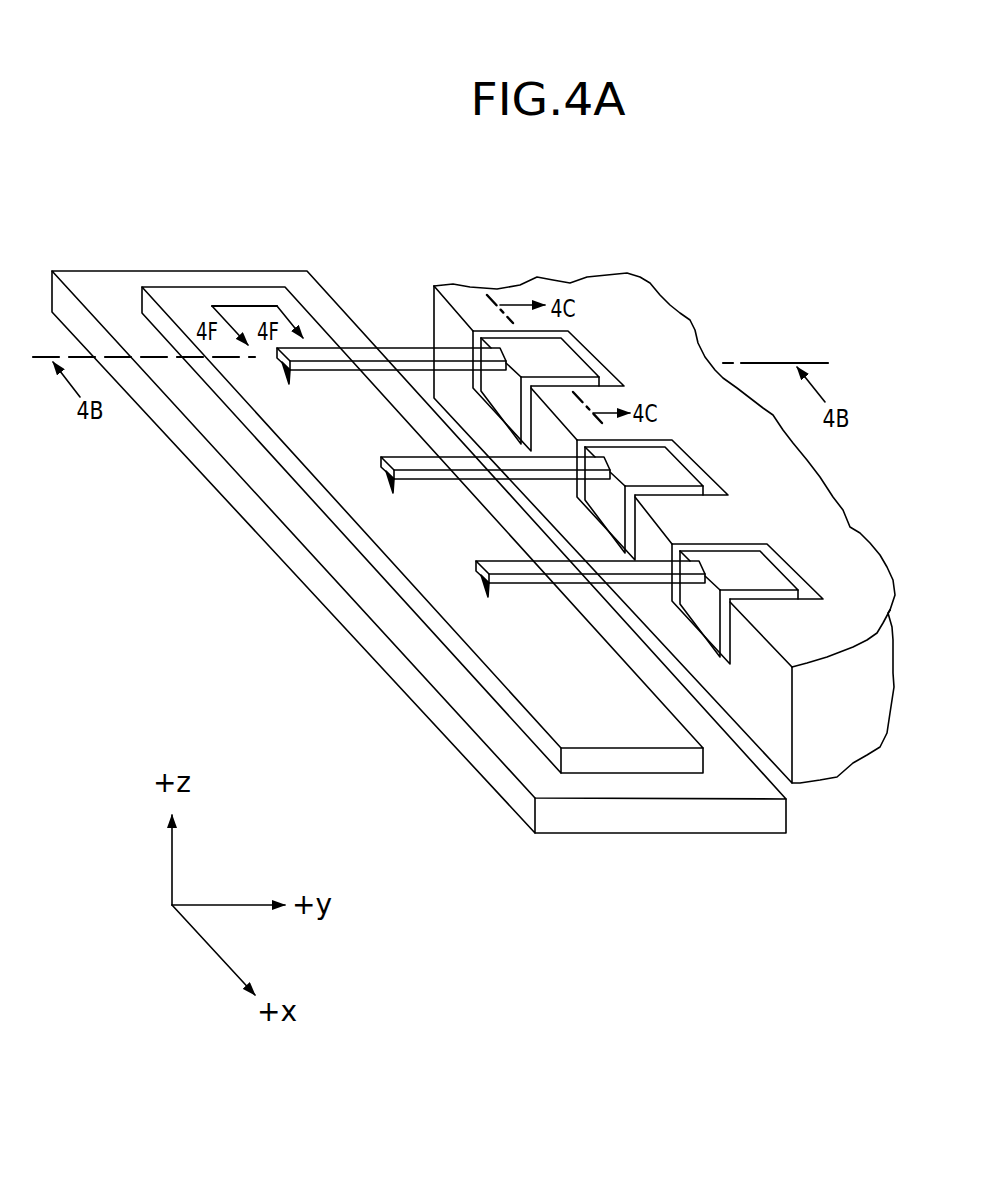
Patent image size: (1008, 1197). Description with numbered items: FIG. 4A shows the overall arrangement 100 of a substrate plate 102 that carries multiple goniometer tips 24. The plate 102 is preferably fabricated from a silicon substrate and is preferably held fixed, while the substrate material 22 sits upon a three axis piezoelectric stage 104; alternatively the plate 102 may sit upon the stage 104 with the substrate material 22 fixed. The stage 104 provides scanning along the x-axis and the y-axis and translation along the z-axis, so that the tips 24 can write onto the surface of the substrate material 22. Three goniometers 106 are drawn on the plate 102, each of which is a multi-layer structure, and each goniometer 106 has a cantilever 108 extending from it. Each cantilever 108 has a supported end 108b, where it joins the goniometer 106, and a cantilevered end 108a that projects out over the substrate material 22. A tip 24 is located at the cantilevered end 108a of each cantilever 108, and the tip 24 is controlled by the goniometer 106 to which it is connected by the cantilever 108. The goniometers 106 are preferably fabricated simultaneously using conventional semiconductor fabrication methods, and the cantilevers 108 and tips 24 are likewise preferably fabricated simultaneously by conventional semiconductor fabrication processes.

The probe card assembly 100 is at (322, 240).
The substrate plate 102 is at (670, 322).
The three axis piezoelectric stage 104 is at (683, 787).
The substrate material 22 is at (516, 668).
The goniometer 106 is at (562, 354).
The cantilever 108 is at (360, 353).
The cantilevered end 108a is at (475, 562).
The supported end 108b is at (695, 565).
The tip 24 is at (388, 483).